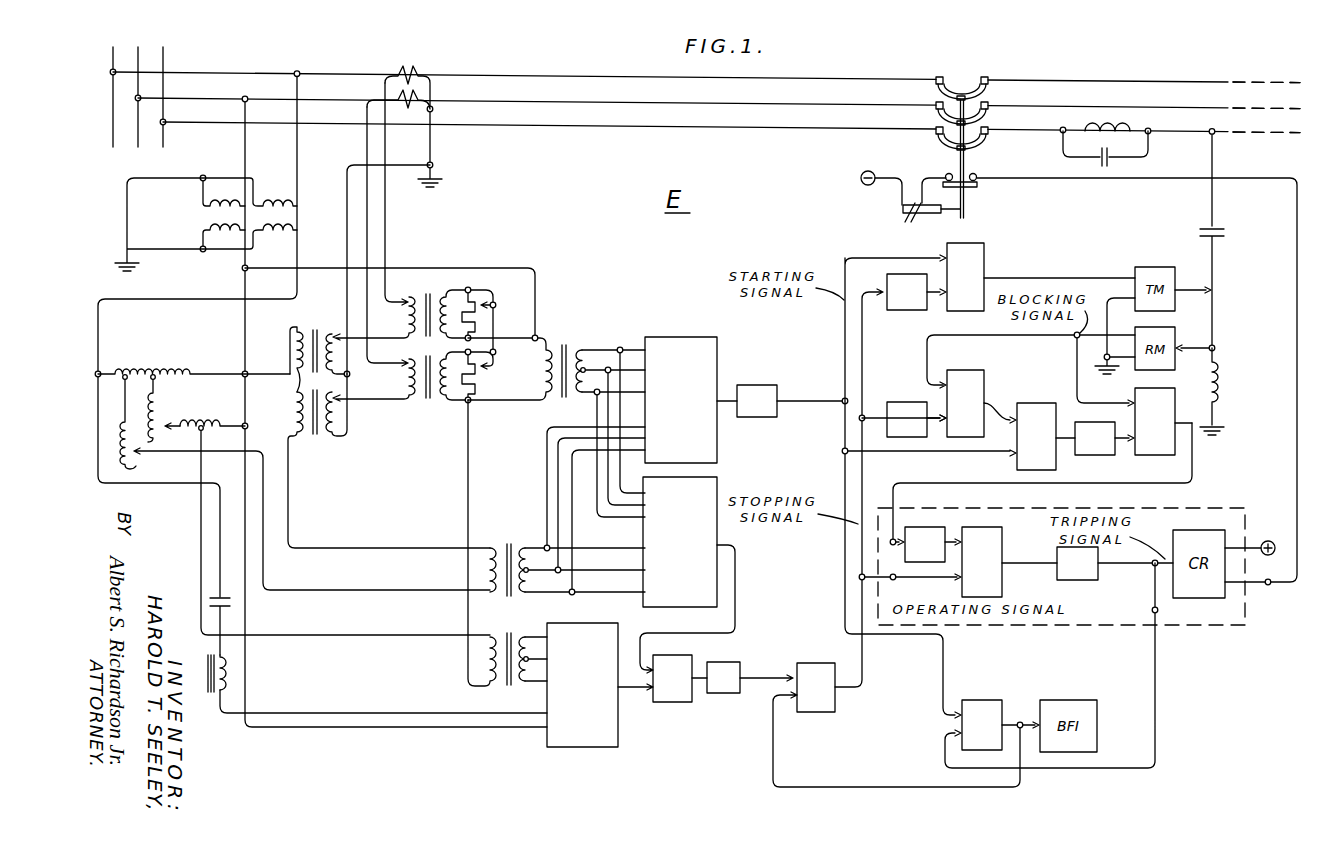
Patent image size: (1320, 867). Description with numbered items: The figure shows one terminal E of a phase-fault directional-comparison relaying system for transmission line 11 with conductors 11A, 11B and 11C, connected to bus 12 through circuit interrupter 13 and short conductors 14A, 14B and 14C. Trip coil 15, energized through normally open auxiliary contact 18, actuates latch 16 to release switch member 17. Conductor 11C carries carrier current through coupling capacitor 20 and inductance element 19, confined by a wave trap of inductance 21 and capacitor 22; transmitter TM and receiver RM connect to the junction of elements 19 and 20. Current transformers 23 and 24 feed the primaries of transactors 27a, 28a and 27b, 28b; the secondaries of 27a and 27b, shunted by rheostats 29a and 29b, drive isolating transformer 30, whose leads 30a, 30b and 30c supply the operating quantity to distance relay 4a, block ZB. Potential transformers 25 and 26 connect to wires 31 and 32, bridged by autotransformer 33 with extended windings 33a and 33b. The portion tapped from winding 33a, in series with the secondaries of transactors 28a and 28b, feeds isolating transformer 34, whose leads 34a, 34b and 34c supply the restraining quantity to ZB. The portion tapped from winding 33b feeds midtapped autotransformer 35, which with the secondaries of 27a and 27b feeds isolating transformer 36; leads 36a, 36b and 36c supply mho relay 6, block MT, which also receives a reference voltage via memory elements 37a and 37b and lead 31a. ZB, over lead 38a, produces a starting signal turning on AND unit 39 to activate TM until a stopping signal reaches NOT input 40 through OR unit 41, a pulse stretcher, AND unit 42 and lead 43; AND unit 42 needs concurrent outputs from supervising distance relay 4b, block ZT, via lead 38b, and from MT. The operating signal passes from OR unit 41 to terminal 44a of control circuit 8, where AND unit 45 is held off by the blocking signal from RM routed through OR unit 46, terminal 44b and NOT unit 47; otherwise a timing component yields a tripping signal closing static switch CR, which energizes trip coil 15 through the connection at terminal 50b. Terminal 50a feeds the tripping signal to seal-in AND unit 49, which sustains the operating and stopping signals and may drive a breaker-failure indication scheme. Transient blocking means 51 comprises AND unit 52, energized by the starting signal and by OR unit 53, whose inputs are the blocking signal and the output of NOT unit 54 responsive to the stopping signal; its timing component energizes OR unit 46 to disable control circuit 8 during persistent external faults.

The relay component ZB 4a is at (686, 341).
The relay component ZT 4b is at (689, 606).
The relay component MT 6 is at (584, 748).
The control circuit 8 is at (1187, 628).
The electric power transmission line 11 is at (1088, 73).
The phase conductor 11A is at (1222, 81).
The phase conductor 11B is at (1222, 106).
The phase conductor 11C is at (1222, 130).
The power source bus 12 is at (152, 40).
The circuit interrupter 13 is at (973, 73).
The conductor 14A is at (558, 75).
The conductor 14B is at (558, 101).
The conductor 14C is at (558, 125).
The trip coil 15 is at (900, 220).
The latch 16 is at (949, 213).
The switch member 17 is at (965, 154).
The auxiliary contact 18 is at (971, 189).
The inductance element 19 is at (1222, 383).
The coupling capacitor 20 is at (1226, 233).
The inductance 21 is at (1085, 125).
The capacitor 22 is at (1100, 161).
The instrument current transformer 23 is at (414, 72).
The instrument current transformer 24 is at (418, 97).
The instrument potential transformer 25 is at (298, 215).
The instrument potential transformer 26 is at (200, 215).
The transactor 27a is at (400, 211).
The transactor 27b is at (400, 263).
The transactor 28a is at (320, 350).
The transactor 28b is at (389, 461).
The rheostat 29a is at (477, 316).
The rheostat 29b is at (477, 377).
The isolating transformer 30 is at (574, 341).
The lead 30a is at (603, 346).
The lead 30b is at (581, 393).
The lead 30c is at (598, 370).
The wire 31 is at (195, 298).
The lead 31a is at (397, 712).
The wire 32 is at (244, 323).
The autotransformer 33 is at (170, 357).
The extended winding 33a is at (132, 466).
The extended winding 33b is at (157, 399).
The isolating transformer 34 is at (514, 609).
The lead 34a is at (526, 538).
The lead 34b is at (540, 592).
The lead 34c is at (531, 572).
The autotransformer 35 is at (218, 420).
The isolating transformer 36 is at (513, 700).
The lead 36a is at (535, 637).
The lead 36b is at (537, 687).
The lead 36c is at (530, 659).
The inductance element 37a is at (228, 677).
The capacitance element 37b is at (231, 603).
The lead 38a is at (727, 403).
The lead 38b is at (736, 587).
The AND logic unit 39 is at (981, 255).
The NOT input 40 is at (905, 310).
The OR logic unit 41 is at (813, 711).
The AND logic unit 42 is at (683, 702).
The lead 43 is at (631, 689).
The input terminal 44a is at (893, 578).
The input terminal 44b is at (891, 542).
The AND logic unit 45 is at (1002, 580).
The OR logic unit 46 is at (1150, 454).
The NOT logic unit 47 is at (928, 527).
The AND logic unit 49 is at (988, 703).
The terminal 50a is at (1159, 611).
The breaker trip circuit junction 50b is at (1268, 586).
The transient blocking means 51 is at (1035, 368).
The AND logic unit 52 is at (1050, 461).
The OR logic unit 53 is at (965, 373).
The NOT logic unit 54 is at (906, 402).